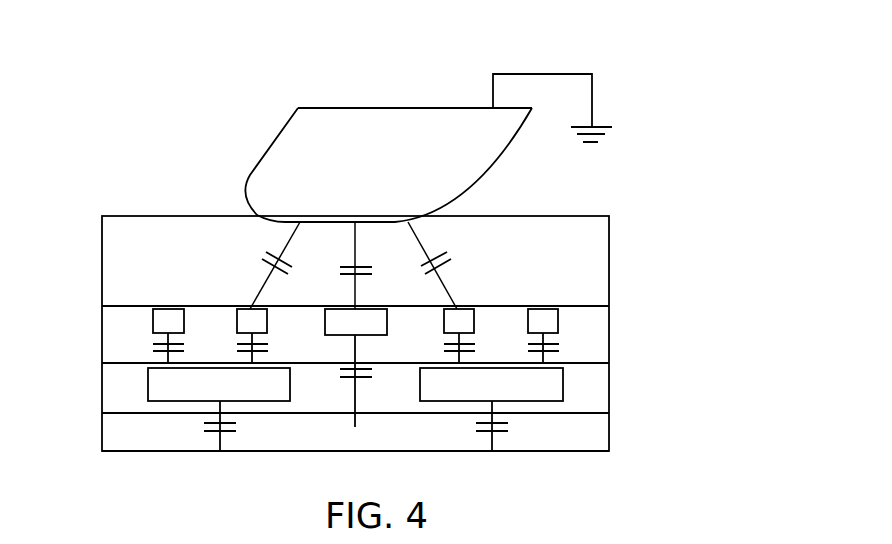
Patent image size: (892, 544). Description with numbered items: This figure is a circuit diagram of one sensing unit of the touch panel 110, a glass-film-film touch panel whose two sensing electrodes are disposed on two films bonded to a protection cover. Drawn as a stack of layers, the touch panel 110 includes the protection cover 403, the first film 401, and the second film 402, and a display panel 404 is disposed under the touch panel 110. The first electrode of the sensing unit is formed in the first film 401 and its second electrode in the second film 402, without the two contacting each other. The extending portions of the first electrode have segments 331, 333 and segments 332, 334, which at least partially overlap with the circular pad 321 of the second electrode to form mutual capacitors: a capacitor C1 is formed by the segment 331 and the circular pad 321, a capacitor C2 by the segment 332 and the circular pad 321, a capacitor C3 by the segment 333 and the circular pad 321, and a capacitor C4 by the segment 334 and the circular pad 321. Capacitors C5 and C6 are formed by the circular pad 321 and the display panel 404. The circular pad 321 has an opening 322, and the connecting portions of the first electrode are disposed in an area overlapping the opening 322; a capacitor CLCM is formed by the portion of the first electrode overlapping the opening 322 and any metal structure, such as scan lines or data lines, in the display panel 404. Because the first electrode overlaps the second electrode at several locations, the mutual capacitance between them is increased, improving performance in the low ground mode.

The touch panel 110 is at (683, 245).
The first film 401 is at (600, 336).
The second film 402 is at (600, 386).
The protection cover 403 is at (600, 262).
The display panel 404 is at (600, 433).
The segment 331 is at (167, 320).
The segment 332 is at (247, 320).
The segment 333 is at (465, 320).
The segment 334 is at (547, 320).
The circular pad 321 is at (242, 398).
The opening 322 is at (317, 396).
The capacitor C1 is at (150, 348).
The capacitor C2 is at (272, 348).
The capacitor C3 is at (440, 348).
The capacitor C4 is at (561, 348).
The capacitor C5 is at (239, 426).
The capacitor C6 is at (514, 426).
The capacitor CLCM is at (374, 381).